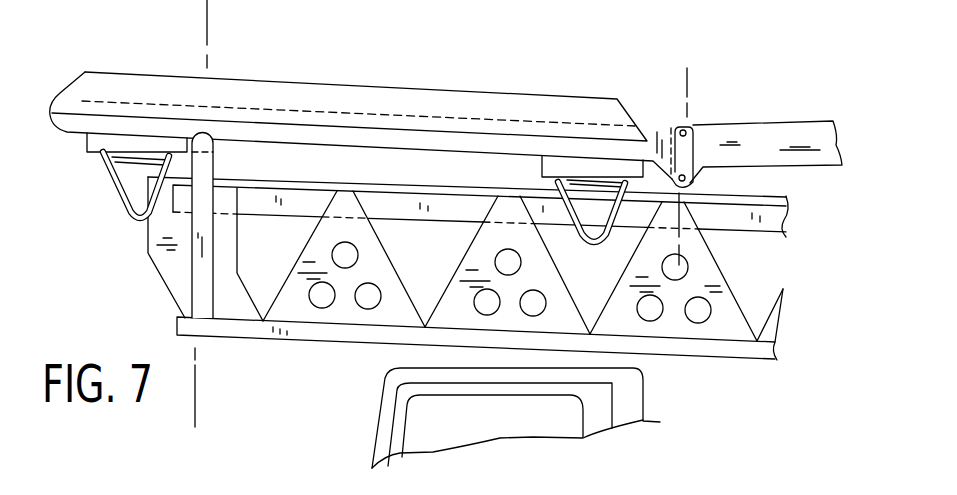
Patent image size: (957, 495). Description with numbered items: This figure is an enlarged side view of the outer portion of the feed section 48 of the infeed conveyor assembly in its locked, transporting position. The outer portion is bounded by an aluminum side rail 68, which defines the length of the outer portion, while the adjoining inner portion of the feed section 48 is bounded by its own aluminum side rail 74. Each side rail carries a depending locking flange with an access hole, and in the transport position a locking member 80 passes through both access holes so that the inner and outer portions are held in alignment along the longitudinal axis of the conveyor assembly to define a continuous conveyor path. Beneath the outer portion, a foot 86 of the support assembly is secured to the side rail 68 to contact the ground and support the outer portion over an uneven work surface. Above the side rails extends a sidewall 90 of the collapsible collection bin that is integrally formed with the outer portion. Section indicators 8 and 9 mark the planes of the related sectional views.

The feed section 48 is at (772, 74).
The sidewall 90 is at (447, 100).
The side rail 68 is at (668, 130).
The side rail 74 is at (800, 130).
The locking member 80 is at (690, 183).
The foot 86 is at (115, 193).
The section line 8- 8 is at (258, 11).
The section line 9- 9 is at (698, 78).